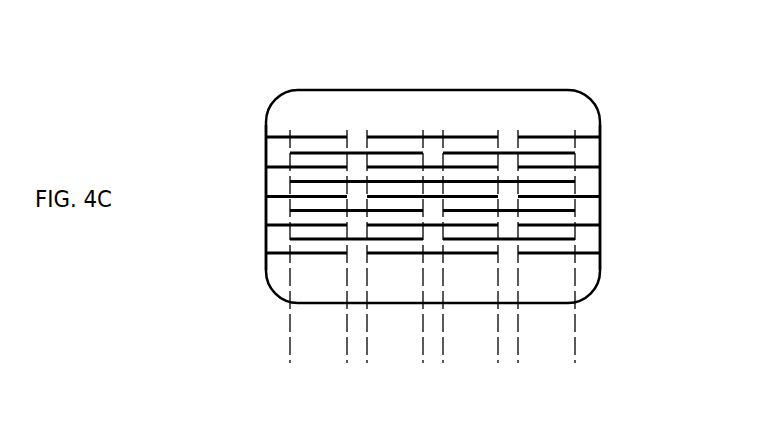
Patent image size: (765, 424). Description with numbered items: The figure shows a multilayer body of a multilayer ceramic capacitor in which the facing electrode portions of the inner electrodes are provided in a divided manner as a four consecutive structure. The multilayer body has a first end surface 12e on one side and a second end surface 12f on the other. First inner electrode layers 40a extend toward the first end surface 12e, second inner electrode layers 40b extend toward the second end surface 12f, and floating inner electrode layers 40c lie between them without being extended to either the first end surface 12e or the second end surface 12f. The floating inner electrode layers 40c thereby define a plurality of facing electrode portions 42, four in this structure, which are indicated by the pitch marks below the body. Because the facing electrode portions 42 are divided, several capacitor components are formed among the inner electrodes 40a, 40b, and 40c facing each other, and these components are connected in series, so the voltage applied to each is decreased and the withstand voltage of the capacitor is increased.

The first inner electrode layers 40a is at (282, 167).
The second inner electrode layers 40b is at (584, 167).
The floating inner electrode layers 40c is at (323, 239).
The first end surface 12e is at (266, 172).
The second end surface 12f is at (600, 173).
The facing electrode portions 42 is at (347, 352).